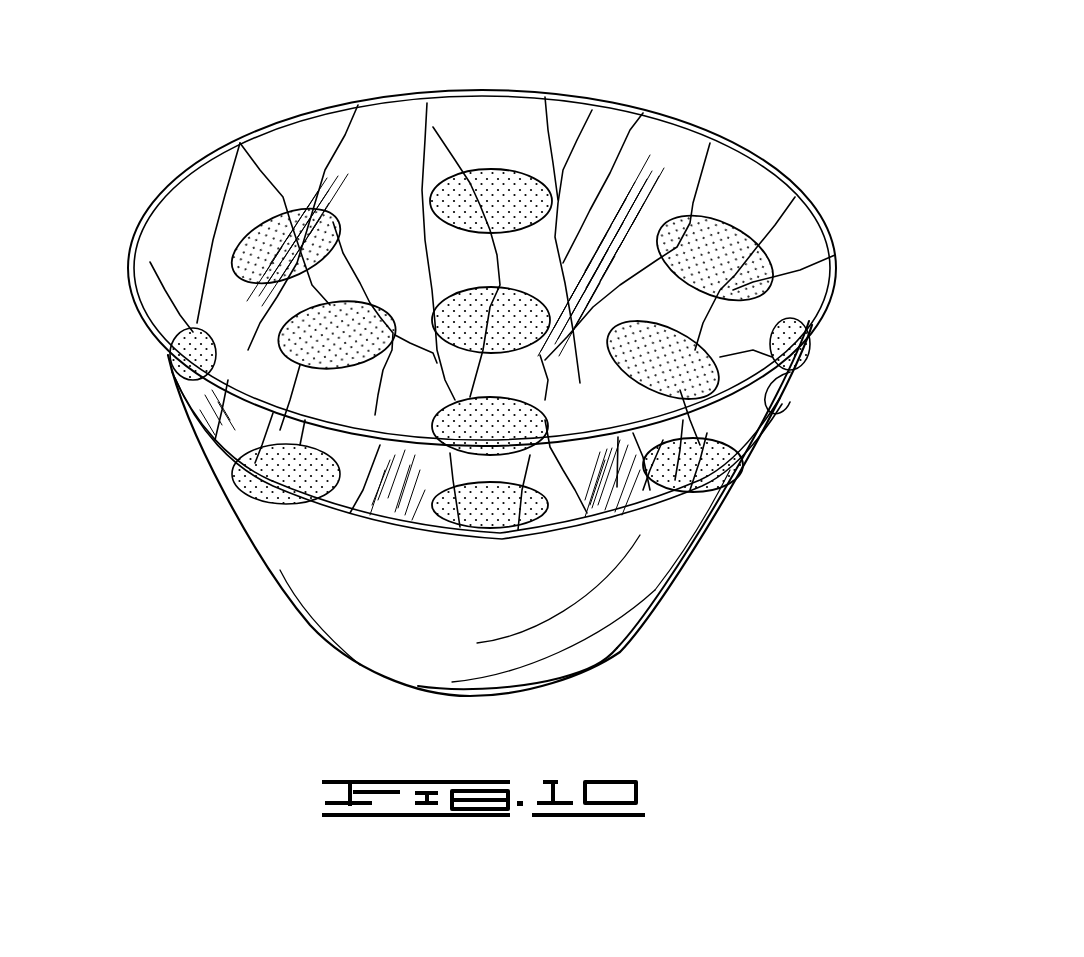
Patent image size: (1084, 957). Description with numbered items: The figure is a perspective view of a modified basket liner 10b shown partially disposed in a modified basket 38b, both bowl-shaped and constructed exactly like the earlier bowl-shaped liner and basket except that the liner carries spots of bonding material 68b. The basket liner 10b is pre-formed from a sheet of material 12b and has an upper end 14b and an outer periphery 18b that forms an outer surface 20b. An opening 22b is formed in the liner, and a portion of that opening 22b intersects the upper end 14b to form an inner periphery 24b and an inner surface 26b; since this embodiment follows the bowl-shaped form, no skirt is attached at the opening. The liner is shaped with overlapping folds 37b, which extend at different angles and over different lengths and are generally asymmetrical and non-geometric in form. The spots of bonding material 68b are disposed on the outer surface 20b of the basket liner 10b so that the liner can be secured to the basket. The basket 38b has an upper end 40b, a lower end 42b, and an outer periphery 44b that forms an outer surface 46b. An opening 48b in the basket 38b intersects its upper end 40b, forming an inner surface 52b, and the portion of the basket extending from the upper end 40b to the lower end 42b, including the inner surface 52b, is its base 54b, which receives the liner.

The basket liner 10b is at (266, 105).
The sheet of material 12b is at (818, 194).
The upper end 14b is at (835, 258).
The outer periphery 18b is at (227, 414).
The outer surface 20b is at (625, 485).
The opening 22b is at (170, 190).
The inner periphery 24b is at (727, 173).
The inner surface 26b is at (663, 137).
The overlapping folds 37b is at (275, 478).
The basket 38b is at (762, 473).
The upper end 40b is at (210, 443).
The lower end 42b is at (456, 697).
The outer periphery 44b is at (692, 573).
The outer surface 46b is at (647, 616).
The opening 48b is at (768, 430).
The inner surface 52b is at (773, 380).
The base 54b is at (327, 613).
The bonding material 68b is at (275, 462).